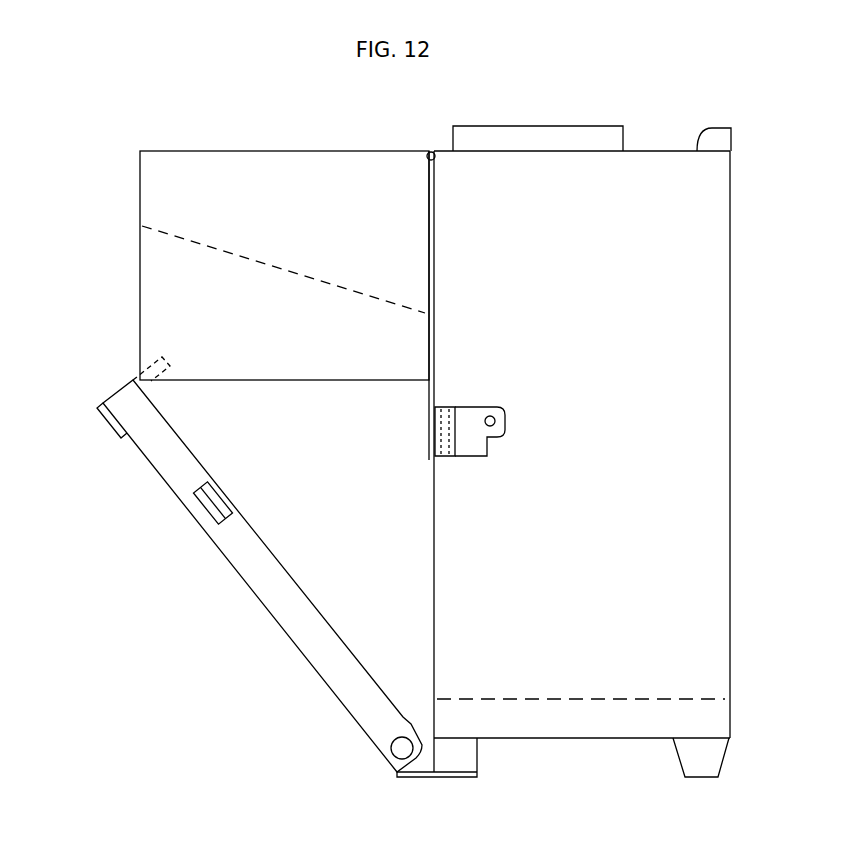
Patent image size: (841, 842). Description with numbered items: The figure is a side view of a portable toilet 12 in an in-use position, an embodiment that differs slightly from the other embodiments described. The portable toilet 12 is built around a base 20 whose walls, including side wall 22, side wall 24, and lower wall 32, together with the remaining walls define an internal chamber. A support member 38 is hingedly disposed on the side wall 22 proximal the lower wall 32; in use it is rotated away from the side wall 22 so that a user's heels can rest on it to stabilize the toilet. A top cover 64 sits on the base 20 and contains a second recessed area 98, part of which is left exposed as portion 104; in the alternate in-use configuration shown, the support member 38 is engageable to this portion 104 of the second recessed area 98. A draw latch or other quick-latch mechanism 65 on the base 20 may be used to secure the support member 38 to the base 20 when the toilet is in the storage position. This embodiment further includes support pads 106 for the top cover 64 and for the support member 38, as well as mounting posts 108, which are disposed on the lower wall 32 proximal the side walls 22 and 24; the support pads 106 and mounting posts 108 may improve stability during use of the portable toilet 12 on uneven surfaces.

The portable toilet 12 is at (193, 120).
The base 20 is at (738, 618).
The side wall 22 is at (432, 507).
The side wall 24 is at (731, 513).
The lower wall 32 is at (706, 739).
The support member 38 is at (292, 610).
The top cover 64 is at (141, 258).
The quick-latch mechanism 65 is at (458, 427).
The second recessed area 98 is at (182, 291).
The portion of the second recessed area 104 is at (160, 382).
The support pads 106 is at (428, 348).
The mounting posts 108 is at (697, 758).